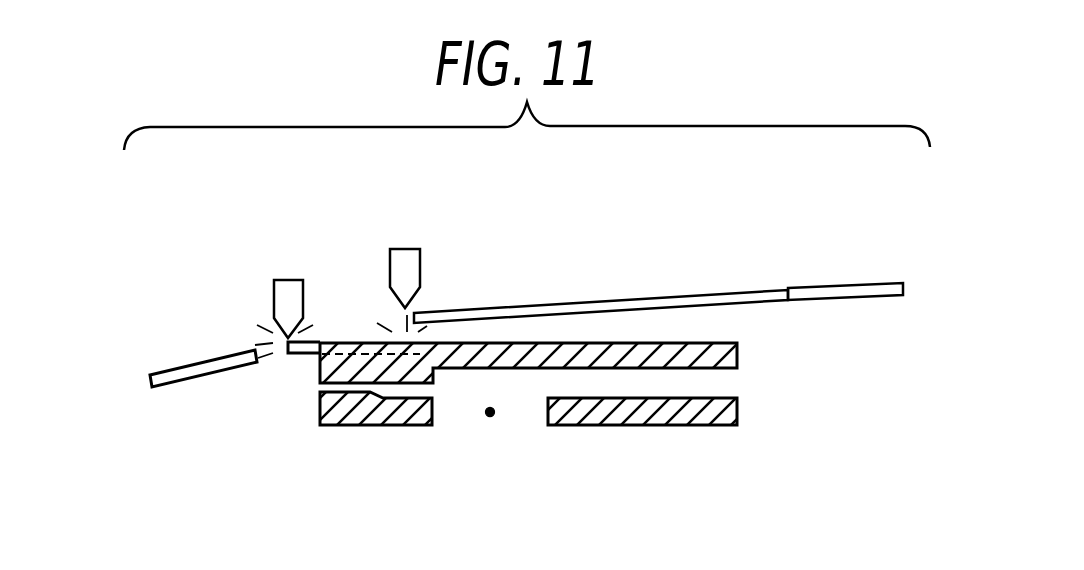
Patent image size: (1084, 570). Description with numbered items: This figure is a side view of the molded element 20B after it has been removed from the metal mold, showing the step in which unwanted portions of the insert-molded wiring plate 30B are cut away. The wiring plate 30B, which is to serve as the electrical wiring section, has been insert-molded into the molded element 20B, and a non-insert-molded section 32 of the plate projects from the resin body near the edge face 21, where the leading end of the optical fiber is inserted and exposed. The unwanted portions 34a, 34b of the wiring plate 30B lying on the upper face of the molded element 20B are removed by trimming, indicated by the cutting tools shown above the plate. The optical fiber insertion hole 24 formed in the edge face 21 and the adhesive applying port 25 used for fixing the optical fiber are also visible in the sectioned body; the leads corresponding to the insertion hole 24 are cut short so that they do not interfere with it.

The molded element 20B is at (573, 436).
The edge face 21 is at (323, 358).
The optical fiber insertion hole 24 is at (320, 392).
The adhesive applying port 25 is at (490, 416).
The wiring plate 30B is at (526, 285).
The non-insert-molded section 32 is at (298, 356).
The unwanted portion 34a is at (173, 369).
The unwanted portion 34b is at (703, 297).